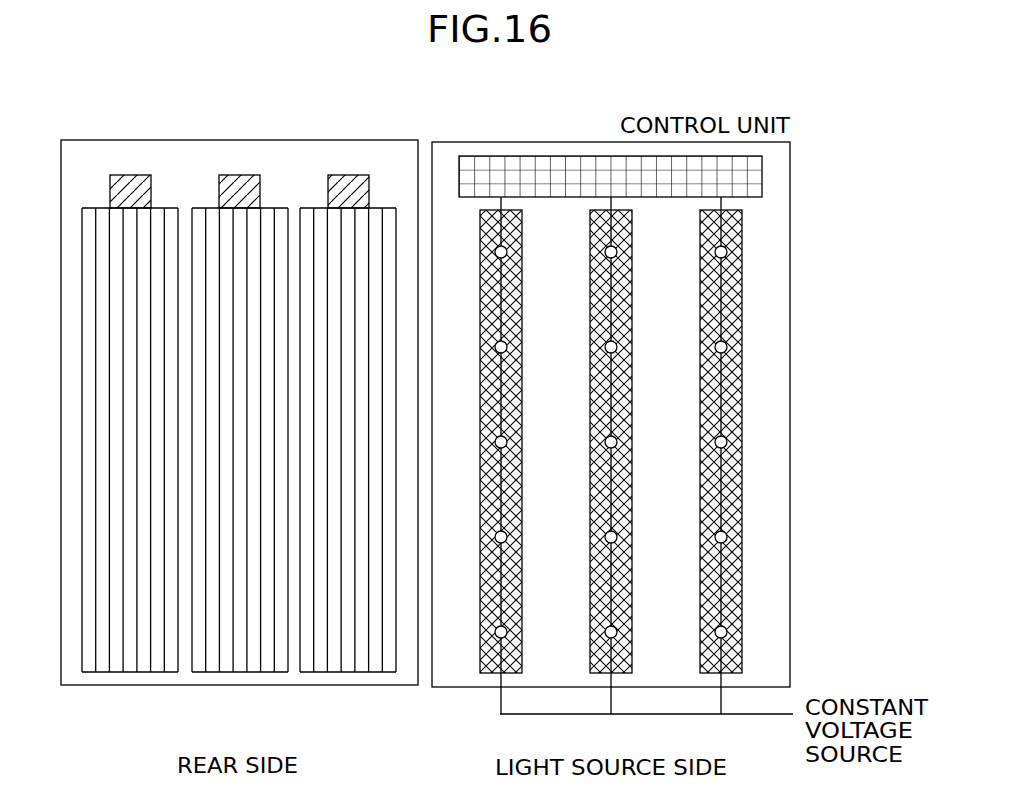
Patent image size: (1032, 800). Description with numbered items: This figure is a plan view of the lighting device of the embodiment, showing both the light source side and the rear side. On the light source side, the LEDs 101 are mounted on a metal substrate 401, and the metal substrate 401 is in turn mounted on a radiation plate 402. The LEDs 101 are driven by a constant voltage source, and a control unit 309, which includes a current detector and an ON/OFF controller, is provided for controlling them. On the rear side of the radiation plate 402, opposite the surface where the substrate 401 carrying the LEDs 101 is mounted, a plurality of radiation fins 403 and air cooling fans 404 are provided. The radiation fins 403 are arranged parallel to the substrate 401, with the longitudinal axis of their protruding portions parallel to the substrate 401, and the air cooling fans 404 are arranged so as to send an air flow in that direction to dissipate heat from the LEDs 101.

The LED 101 is at (727, 346).
The control unit 309 is at (532, 162).
The metal substrate 401 is at (742, 225).
The radiation plate 402 is at (238, 140).
The radiation fin 403 is at (90, 214).
The air cooling fan 404 is at (131, 174).